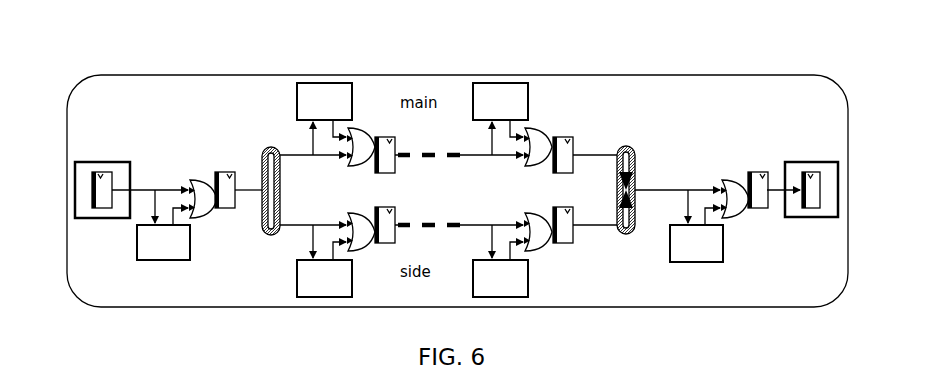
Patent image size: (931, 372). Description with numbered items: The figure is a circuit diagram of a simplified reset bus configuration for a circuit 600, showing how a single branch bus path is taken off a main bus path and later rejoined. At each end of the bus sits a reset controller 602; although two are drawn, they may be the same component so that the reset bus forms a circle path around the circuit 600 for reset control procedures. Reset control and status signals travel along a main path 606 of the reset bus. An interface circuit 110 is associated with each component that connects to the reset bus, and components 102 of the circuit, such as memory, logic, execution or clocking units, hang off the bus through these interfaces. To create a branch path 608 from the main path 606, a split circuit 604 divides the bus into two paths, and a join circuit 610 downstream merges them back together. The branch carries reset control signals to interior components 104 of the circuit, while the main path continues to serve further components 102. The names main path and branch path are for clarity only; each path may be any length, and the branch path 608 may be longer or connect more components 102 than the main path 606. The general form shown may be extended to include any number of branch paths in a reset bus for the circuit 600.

The circuit 600 is at (246, 58).
The reset controller 602 is at (82, 190).
The main path 606 is at (148, 190).
The interface circuit 110 is at (224, 170).
The split circuit 604 is at (256, 153).
The branch path 608 is at (245, 227).
The join circuit 610 is at (644, 152).
The components 102 is at (430, 172).
The interior components 104 is at (412, 278).